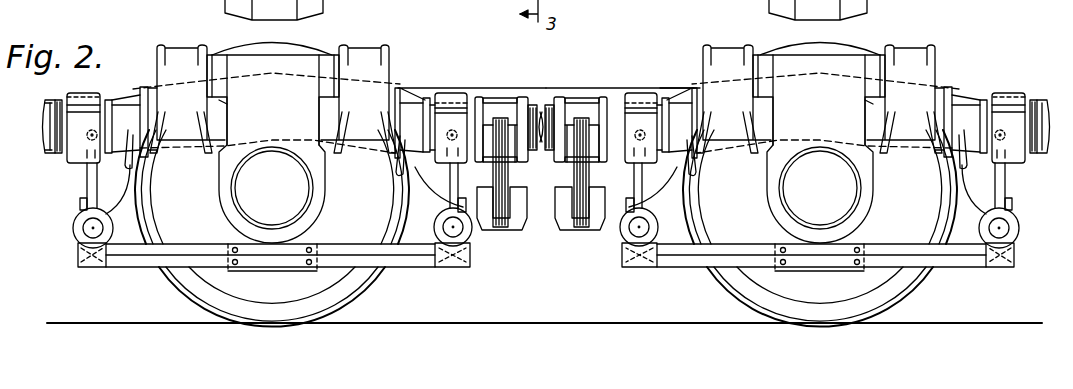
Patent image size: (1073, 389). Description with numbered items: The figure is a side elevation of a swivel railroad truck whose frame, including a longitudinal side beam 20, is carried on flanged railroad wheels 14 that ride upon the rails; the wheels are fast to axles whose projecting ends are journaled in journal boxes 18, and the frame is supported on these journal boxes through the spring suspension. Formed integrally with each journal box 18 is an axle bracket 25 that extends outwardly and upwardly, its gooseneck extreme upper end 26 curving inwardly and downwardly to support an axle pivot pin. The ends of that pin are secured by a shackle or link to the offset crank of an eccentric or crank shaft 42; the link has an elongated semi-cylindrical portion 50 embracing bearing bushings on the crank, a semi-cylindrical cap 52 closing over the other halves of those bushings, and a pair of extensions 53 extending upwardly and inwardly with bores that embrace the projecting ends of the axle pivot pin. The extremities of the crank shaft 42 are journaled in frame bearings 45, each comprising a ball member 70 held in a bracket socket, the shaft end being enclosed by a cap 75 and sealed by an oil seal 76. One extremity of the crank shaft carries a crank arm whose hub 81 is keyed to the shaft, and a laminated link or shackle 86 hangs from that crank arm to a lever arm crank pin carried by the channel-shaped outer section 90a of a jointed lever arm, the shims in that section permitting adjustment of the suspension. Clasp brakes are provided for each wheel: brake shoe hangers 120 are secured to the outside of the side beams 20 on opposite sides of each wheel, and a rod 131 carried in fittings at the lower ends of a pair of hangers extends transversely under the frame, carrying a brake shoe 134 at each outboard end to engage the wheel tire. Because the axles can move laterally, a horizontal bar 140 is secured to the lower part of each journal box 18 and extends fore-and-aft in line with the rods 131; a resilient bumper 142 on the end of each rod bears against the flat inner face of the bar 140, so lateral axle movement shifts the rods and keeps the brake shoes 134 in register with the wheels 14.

The flanged railroad wheel 14 is at (353, 300).
The journal box 18 is at (232, 195).
The longitudinal side beam 20 is at (48, 102).
The axle bracket 25 is at (340, 3).
The extreme upper end of axle bracket 26 is at (274, 55).
The eccentric or crank shaft 42 is at (128, 91).
The frame bearing 45 is at (1012, 75).
The semi-cylindrical portion of link 50 is at (218, 101).
The semi-cylindrical cap 52 is at (882, 163).
The extension of link 53 is at (178, 60).
The ball member 70 is at (678, 66).
The cap 75 is at (55, 133).
The oil seal 76 is at (600, 326).
The hub of crank arm 81 is at (478, 100).
The laminated link or shackle 86 is at (572, 173).
The outer section of lever arm 90a is at (575, 232).
The brake shoe hanger 120 is at (88, 185).
The rod 131 is at (93, 228).
The brake shoe 134 is at (125, 225).
The horizontal bar 140 is at (417, 267).
The resilient bumper 142 is at (88, 275).